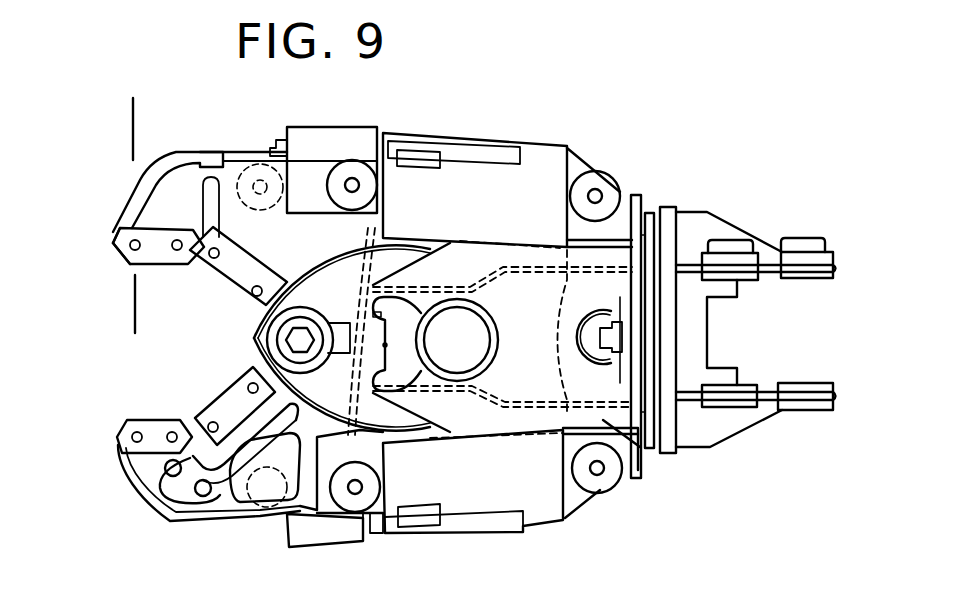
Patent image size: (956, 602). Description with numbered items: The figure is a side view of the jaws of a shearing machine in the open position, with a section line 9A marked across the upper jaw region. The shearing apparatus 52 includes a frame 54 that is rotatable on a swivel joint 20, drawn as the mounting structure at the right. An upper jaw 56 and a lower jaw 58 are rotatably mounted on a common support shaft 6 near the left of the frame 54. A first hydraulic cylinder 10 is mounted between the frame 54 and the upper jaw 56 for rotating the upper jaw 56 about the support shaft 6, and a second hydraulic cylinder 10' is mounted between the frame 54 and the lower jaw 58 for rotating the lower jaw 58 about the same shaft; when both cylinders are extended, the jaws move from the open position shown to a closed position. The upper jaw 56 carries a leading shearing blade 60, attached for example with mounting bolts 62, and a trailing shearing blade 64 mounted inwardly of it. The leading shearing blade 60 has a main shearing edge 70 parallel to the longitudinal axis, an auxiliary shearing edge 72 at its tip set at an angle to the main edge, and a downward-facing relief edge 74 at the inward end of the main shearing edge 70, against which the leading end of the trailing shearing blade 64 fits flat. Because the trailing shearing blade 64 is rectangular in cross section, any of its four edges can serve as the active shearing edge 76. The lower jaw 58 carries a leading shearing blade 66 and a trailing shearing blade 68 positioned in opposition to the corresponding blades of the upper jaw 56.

The shearing apparatus 52 is at (500, 84).
The first hydraulic cylinder 10 is at (525, 168).
The second hydraulic cylinder 10' is at (515, 493).
The frame 54 is at (640, 447).
The swivel joint 20 is at (700, 194).
The upper jaw 56 is at (200, 170).
The leading shearing blade 60 is at (143, 230).
The mounting bolts 62 is at (177, 236).
The auxiliary shearing edge 72 is at (118, 261).
The main shearing edge 70 is at (150, 275).
The trailing shearing blade 64 is at (245, 278).
The relief edge 74 is at (240, 292).
The active shearing edge 76 is at (243, 308).
The support shaft 6 is at (296, 342).
The trailing shearing blade 68 is at (228, 400).
The leading shearing blade 66 is at (130, 460).
The lower jaw 58 is at (188, 515).
The section line 9A is at (133, 112).